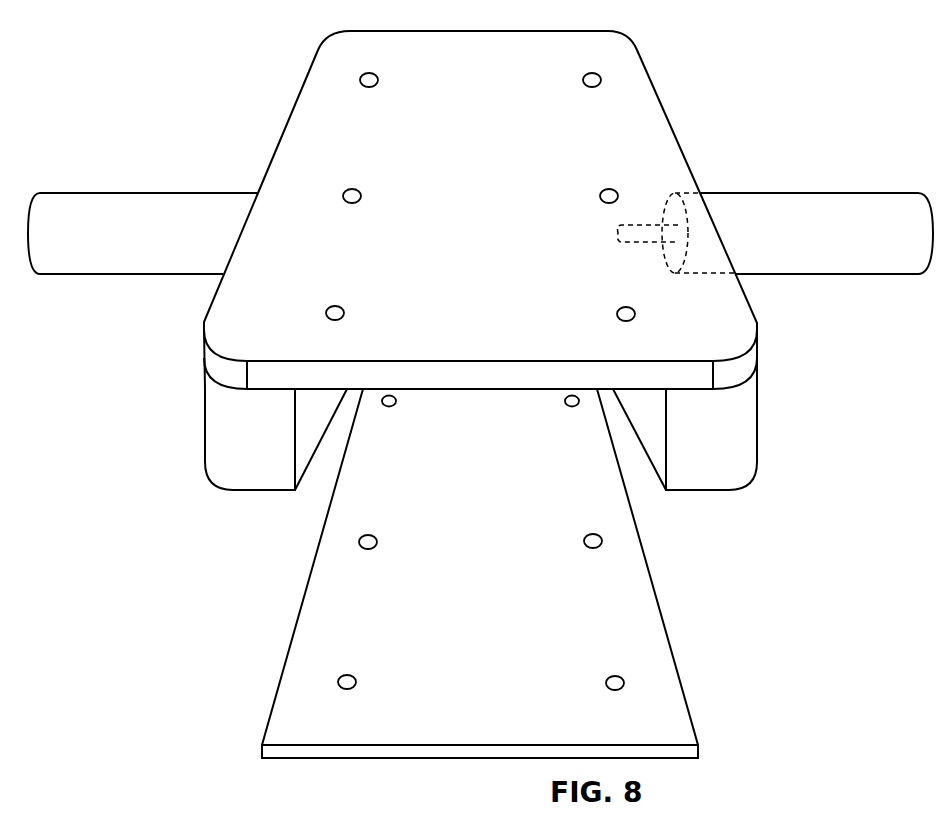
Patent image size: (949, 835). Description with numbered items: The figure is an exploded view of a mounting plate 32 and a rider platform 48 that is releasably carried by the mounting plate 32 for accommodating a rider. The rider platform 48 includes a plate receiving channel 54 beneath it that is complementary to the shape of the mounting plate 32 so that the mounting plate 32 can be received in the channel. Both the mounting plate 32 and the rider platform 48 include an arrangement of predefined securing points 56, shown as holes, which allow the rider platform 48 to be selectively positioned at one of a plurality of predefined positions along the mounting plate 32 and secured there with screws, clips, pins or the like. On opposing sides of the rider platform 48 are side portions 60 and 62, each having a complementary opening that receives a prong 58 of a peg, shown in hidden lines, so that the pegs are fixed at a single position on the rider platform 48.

The mounting plate 32 is at (642, 637).
The rider platform 48 is at (637, 70).
The plate receiving channel 54 is at (646, 500).
The predefined securing points 56 is at (600, 196).
The prong 58 is at (635, 225).
The side portion 60 is at (742, 428).
The side portion 62 is at (218, 440).